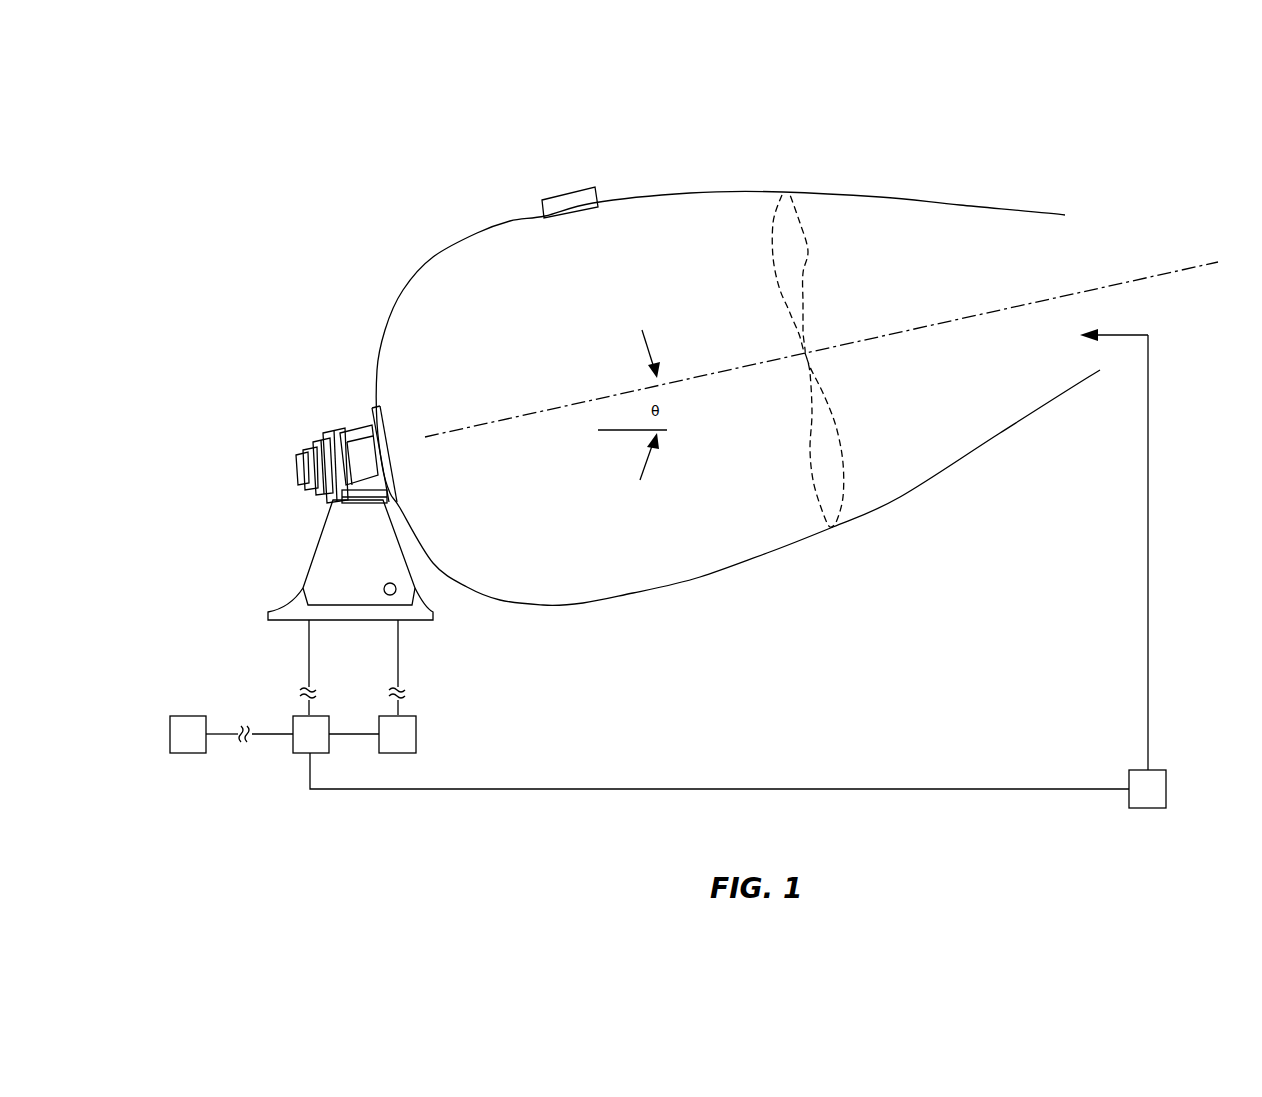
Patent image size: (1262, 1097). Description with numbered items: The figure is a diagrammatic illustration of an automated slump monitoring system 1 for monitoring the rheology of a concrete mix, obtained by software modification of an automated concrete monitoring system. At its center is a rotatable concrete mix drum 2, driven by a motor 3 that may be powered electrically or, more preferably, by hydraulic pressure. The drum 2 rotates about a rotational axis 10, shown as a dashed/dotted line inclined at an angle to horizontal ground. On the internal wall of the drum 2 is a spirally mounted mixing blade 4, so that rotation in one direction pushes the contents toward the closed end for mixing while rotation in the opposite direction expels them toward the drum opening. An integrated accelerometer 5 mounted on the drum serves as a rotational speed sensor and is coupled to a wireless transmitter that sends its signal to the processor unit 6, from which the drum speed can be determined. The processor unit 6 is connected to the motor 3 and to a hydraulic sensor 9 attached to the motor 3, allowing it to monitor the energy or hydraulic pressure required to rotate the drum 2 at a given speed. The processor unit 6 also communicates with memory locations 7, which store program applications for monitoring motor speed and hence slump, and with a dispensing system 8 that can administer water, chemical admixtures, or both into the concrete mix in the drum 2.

The automated slump monitoring system 1 is at (366, 168).
The rotatable concrete mix drum 2 is at (940, 473).
The motor 3 is at (343, 553).
The mixing blade 4 is at (830, 488).
The integrated accelerometer 5 is at (597, 203).
The processor unit 6 is at (292, 745).
The memory locations 7 is at (186, 716).
The dispensing system 8 is at (1167, 787).
The hydraulic sensor 9 is at (416, 722).
The rotational axis of the drum 10 is at (1177, 272).